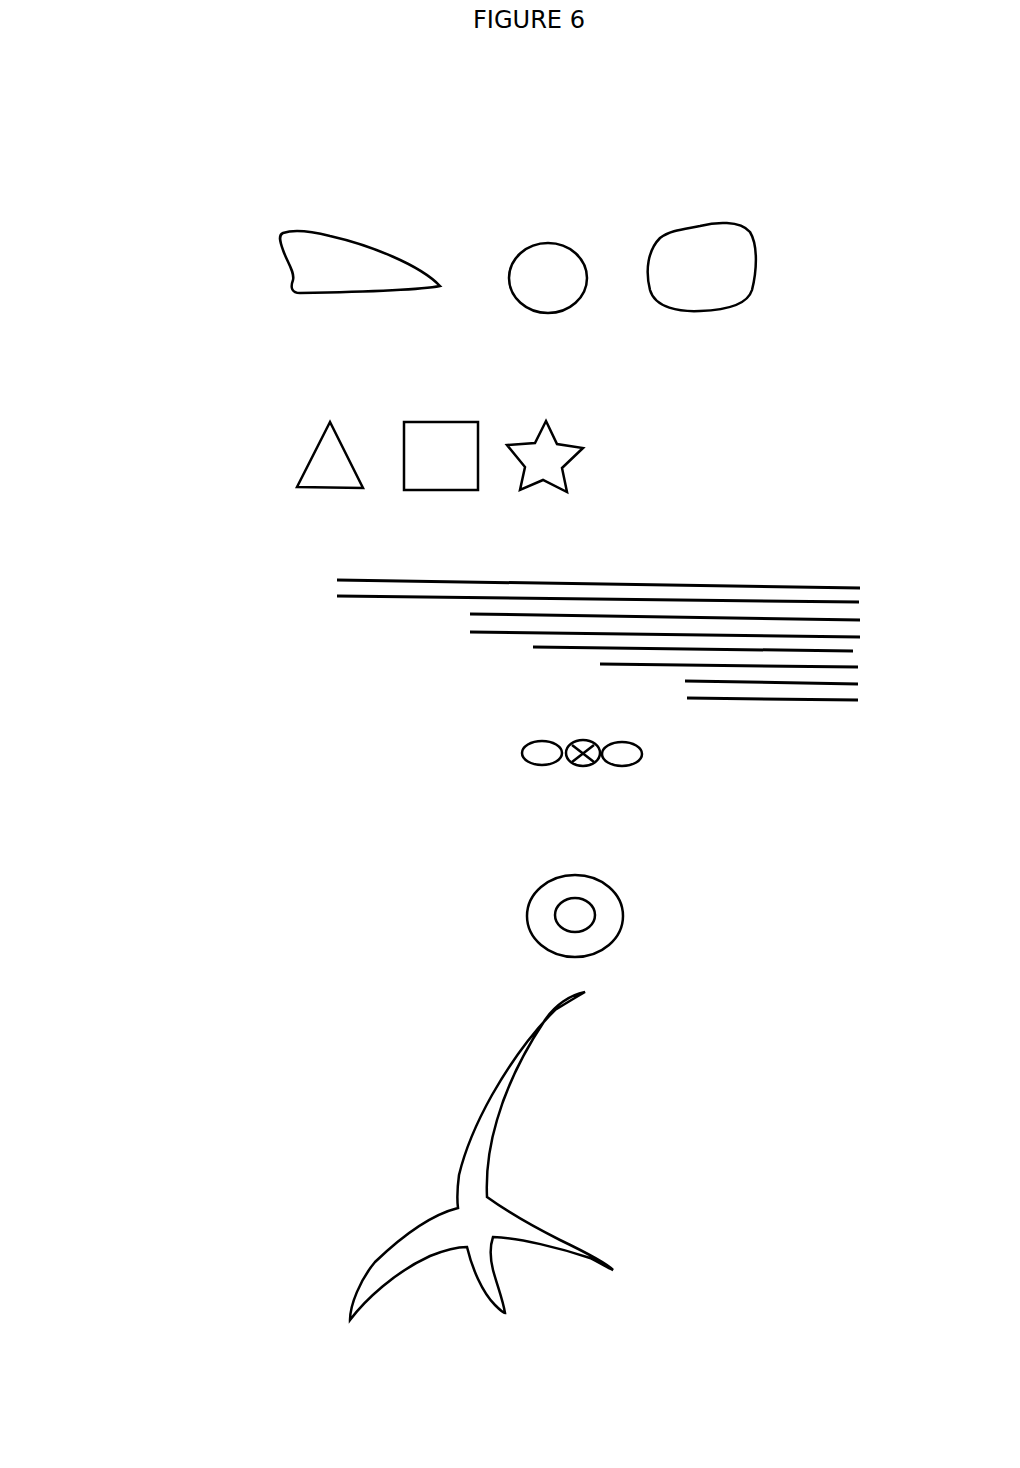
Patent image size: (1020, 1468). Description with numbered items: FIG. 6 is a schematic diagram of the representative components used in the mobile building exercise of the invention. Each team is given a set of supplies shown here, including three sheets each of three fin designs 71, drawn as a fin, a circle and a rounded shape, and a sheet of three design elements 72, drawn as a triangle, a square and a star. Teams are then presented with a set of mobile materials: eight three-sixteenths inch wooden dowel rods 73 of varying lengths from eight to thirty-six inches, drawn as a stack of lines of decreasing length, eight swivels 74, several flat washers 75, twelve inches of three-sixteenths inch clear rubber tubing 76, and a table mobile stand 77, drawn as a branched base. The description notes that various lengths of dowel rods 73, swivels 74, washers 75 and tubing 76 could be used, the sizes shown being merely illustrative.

The fin designs 71 is at (168, 208).
The design elements 72 is at (168, 383).
The dowel rods 73 is at (168, 542).
The swivels 74 is at (168, 742).
The flat washers 75 is at (168, 905).
The clear rubber tubing 76 is at (160, 1059).
The table mobile stand 77 is at (160, 1183).